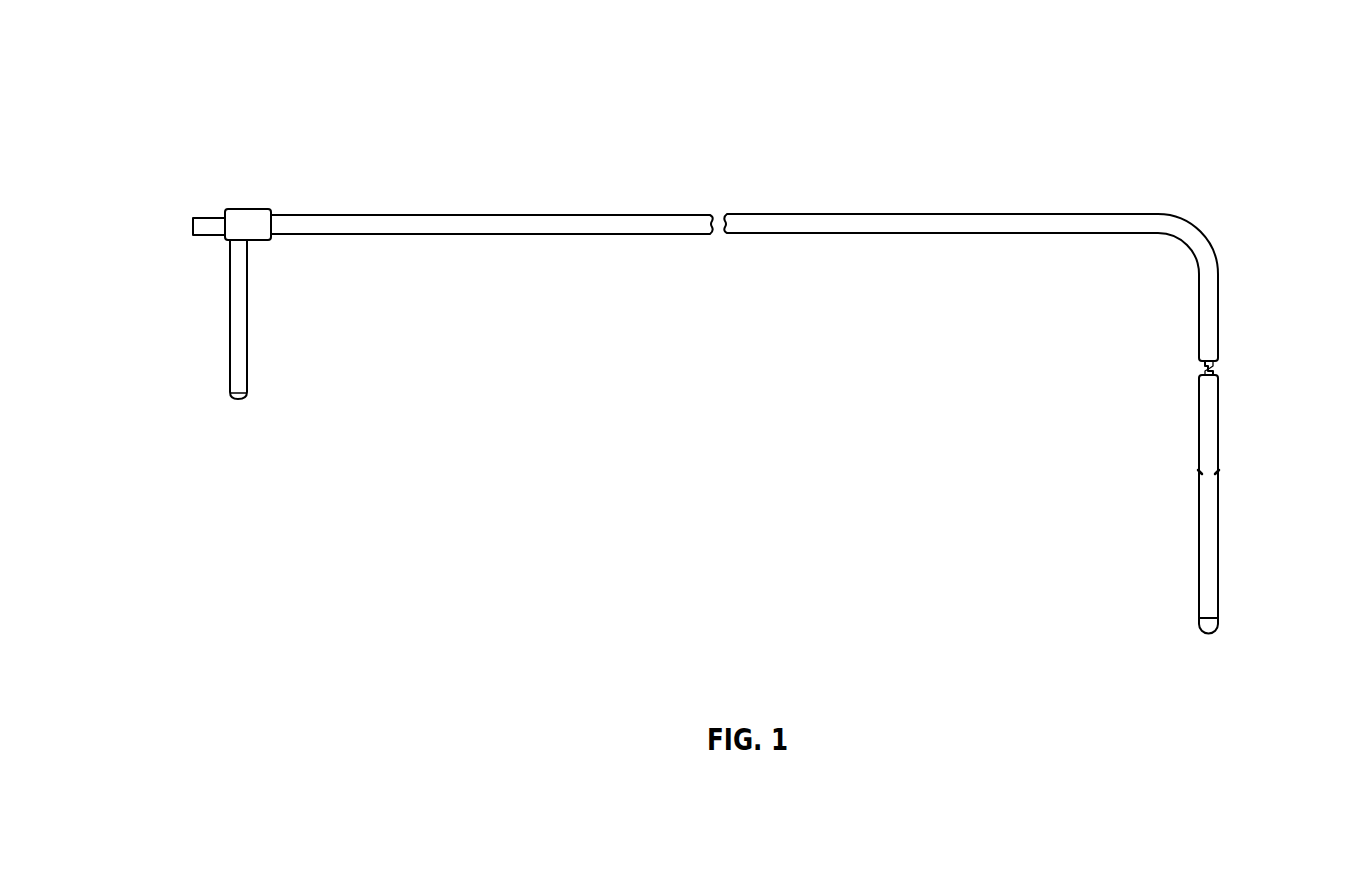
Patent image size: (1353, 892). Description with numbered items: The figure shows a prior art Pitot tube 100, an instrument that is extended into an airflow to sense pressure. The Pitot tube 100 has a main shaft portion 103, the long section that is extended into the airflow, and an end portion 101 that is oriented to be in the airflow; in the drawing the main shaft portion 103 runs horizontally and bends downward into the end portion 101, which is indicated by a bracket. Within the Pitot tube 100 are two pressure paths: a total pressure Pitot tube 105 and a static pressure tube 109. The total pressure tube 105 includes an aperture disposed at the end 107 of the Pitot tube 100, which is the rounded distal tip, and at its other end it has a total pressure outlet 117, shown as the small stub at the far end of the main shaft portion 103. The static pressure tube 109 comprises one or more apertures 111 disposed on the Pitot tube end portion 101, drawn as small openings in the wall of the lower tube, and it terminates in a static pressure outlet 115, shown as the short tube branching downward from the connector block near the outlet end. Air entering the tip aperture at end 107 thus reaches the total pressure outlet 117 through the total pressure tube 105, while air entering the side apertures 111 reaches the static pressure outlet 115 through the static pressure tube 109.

The Pitot tube 100 is at (692, 415).
The end portion 101 is at (1157, 496).
The main shaft portion 103 is at (202, 163).
The total pressure Pitot tube 105 is at (1208, 371).
The end 107 is at (1239, 679).
The static pressure tube 109 is at (1208, 525).
The apertures 111 is at (1208, 472).
The static pressure outlet 115 is at (245, 318).
The total pressure outlet 117 is at (200, 221).